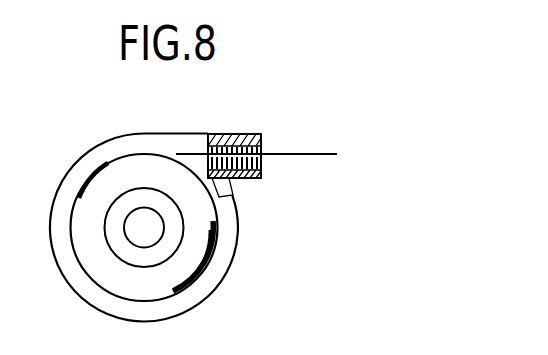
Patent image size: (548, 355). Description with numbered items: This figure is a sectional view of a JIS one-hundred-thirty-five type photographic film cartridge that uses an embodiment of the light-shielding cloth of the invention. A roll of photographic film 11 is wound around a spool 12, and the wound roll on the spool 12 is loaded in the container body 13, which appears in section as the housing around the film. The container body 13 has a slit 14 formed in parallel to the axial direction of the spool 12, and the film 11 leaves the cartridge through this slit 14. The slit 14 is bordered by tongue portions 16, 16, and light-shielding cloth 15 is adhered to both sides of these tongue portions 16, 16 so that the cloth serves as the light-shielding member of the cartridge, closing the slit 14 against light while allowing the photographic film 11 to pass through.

The photographic film 11 is at (335, 155).
The spool 12 is at (178, 227).
The container body 13 is at (117, 134).
The slit 14 is at (267, 152).
The light-shielding cloth 15 is at (207, 147).
The tongue portions 16 is at (227, 134).